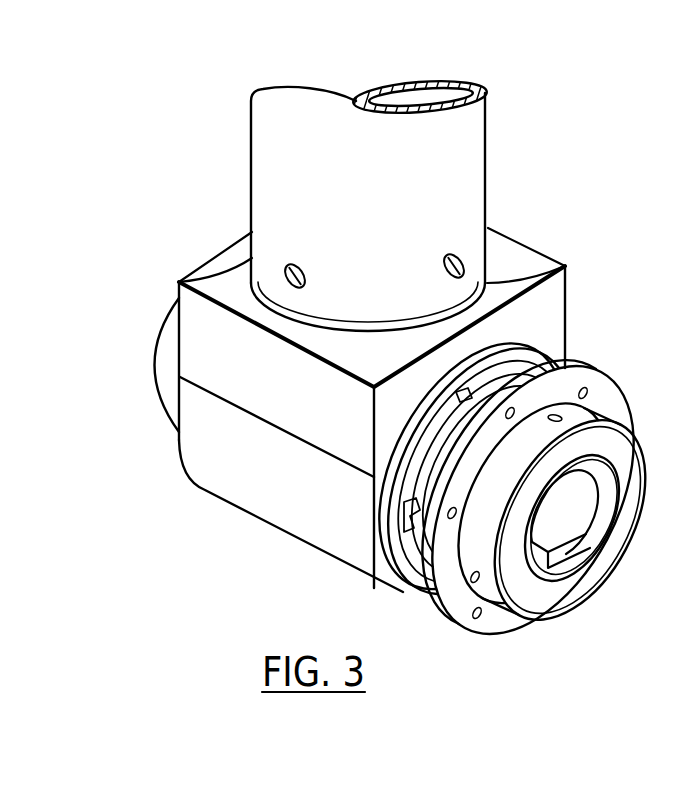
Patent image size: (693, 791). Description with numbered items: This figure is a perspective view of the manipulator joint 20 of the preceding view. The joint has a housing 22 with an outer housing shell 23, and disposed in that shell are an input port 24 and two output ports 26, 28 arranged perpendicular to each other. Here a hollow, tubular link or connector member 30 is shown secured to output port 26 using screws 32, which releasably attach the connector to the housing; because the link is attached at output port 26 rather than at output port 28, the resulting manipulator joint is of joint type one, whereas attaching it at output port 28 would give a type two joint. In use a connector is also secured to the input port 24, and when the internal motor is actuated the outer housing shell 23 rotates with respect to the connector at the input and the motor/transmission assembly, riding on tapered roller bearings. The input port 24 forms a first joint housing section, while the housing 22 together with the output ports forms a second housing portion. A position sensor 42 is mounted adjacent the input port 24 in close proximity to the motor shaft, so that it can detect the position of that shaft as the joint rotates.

The manipulator joint 20 is at (576, 175).
The housing 22 is at (556, 308).
The outer housing shell 23 is at (227, 477).
The input port 24 is at (515, 623).
The output port 26 is at (541, 268).
The output port 28 is at (158, 347).
The connector member 30 is at (481, 172).
The screws 32 is at (446, 262).
The position sensor 42 is at (568, 532).